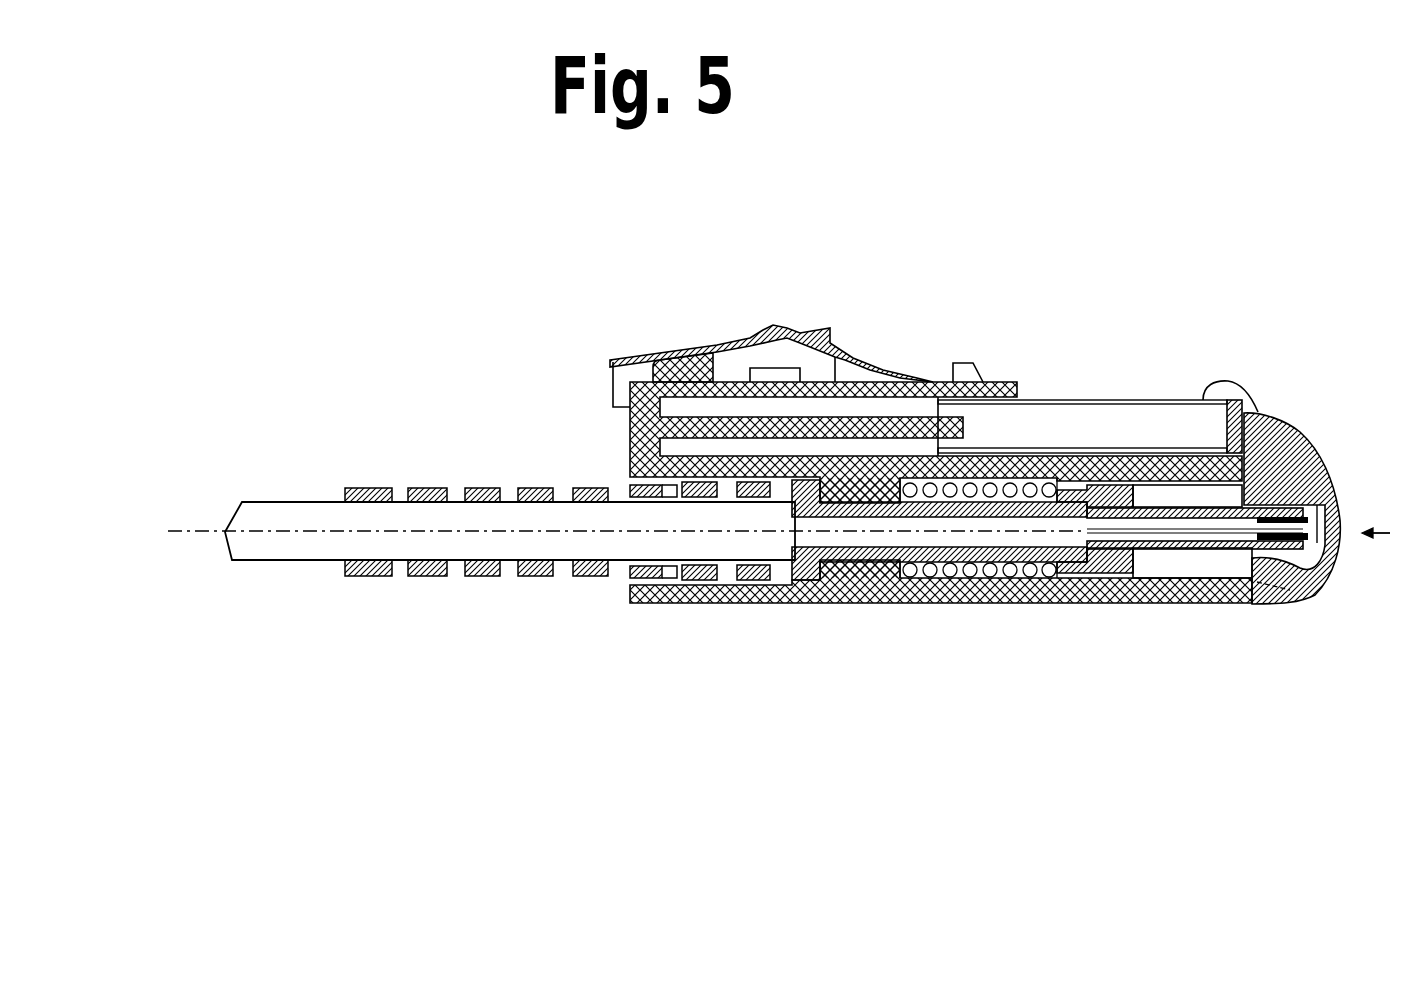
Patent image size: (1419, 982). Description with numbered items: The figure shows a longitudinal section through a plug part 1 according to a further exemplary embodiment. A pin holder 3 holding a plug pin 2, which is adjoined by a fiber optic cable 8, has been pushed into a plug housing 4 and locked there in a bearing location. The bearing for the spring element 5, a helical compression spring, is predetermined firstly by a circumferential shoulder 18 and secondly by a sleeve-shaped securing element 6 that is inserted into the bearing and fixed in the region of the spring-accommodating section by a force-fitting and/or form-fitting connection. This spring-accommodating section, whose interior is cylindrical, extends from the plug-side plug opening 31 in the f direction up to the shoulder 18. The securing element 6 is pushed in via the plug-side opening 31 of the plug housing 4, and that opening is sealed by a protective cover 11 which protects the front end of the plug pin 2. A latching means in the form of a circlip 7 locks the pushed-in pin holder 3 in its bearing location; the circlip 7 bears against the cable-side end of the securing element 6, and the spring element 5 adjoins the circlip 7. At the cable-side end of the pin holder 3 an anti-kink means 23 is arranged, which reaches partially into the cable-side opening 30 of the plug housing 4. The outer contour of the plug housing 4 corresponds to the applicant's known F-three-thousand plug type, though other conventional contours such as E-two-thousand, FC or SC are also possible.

The plug part 1 is at (956, 240).
The plug pin 2 is at (1212, 548).
The pin holder 3 is at (833, 565).
The plug housing 4 is at (637, 445).
The spring element 5 is at (1013, 482).
The securing element 6 is at (1100, 575).
The circlip 7 is at (1060, 565).
The fiber optic cable 8 is at (250, 545).
The protective cover 11 is at (1327, 481).
The shoulder 18 is at (880, 567).
The anti-kink means 23 is at (487, 577).
The cable-side opening 30 is at (632, 582).
The plug-side plug opening 31 is at (1252, 559).